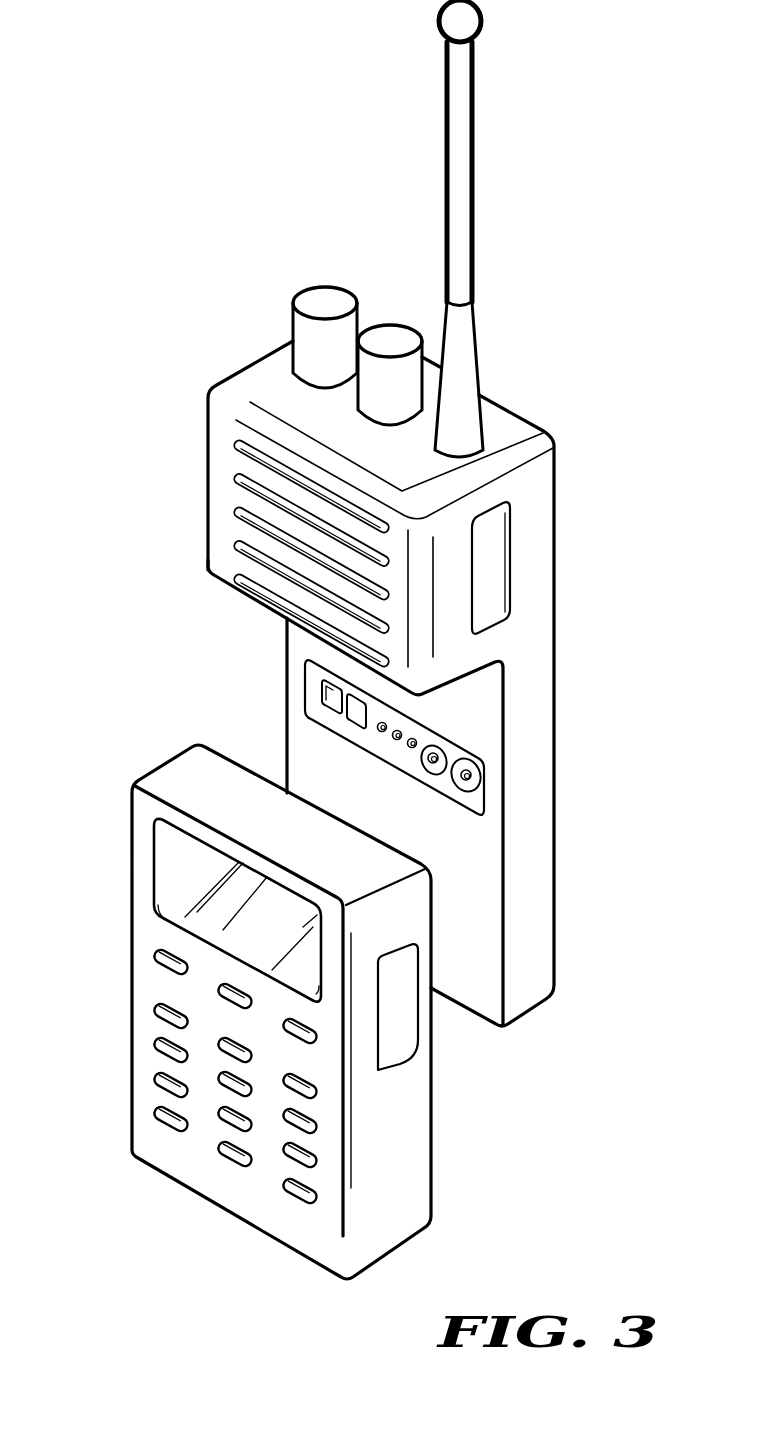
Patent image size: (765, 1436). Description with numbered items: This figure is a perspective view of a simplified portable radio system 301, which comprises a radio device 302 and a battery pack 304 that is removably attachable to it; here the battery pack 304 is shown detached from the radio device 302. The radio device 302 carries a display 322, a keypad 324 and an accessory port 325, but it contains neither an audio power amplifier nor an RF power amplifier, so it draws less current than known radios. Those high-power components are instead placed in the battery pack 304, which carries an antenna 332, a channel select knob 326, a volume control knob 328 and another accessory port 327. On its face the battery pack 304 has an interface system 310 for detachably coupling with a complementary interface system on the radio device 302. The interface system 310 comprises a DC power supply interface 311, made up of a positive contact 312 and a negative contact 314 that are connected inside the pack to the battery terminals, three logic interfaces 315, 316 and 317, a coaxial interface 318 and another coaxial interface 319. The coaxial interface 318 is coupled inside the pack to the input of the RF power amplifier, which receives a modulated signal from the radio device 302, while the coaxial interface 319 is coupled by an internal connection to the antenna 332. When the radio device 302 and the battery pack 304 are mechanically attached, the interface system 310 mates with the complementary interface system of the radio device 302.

The portable radio system 301 is at (363, 1325).
The radio device 302 is at (131, 957).
The battery pack 304 is at (556, 741).
The interface system 310 is at (443, 727).
The DC power supply interface 311 is at (283, 692).
The positive contact 312 is at (320, 678).
The negative contact 314 is at (352, 727).
The logic interface 315 is at (382, 731).
The logic interface 316 is at (397, 739).
The logic interface 317 is at (412, 747).
The coaxial interface 318 is at (437, 755).
The coaxial interface 319 is at (468, 773).
The display 322 is at (188, 857).
The keypad 324 is at (173, 1085).
The accessory port 325 is at (395, 1027).
The channel select knob 326 is at (393, 330).
The accessory port 327 is at (483, 533).
The volume control knob 328 is at (295, 297).
The antenna 332 is at (438, 25).